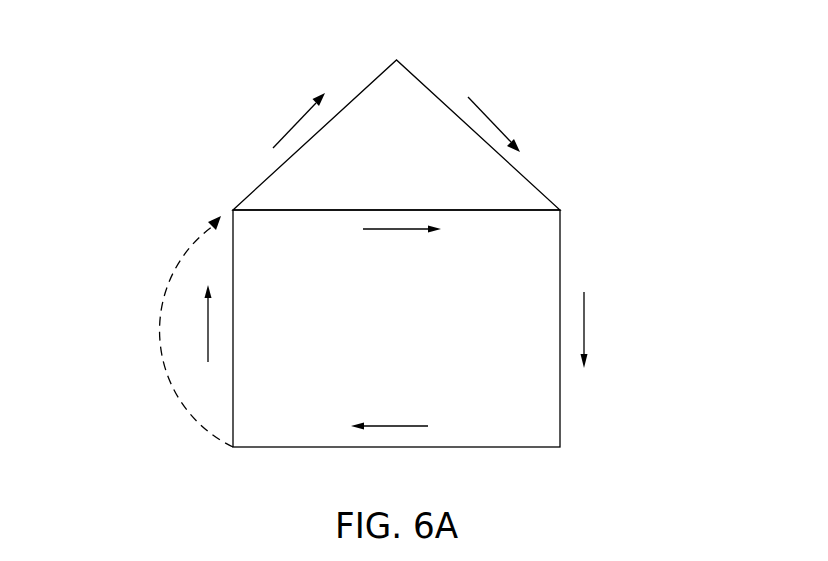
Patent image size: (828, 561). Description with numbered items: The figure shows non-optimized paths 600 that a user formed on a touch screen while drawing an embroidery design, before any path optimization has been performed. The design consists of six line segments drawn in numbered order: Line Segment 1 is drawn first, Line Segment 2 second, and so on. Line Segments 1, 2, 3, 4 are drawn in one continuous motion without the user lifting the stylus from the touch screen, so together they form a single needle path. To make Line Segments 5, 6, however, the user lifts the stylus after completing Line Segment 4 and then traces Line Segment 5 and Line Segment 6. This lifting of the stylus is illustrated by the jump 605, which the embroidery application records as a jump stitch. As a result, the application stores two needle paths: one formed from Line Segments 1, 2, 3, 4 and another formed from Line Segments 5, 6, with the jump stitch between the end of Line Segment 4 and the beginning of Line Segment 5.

The non-optimized paths 600 is at (603, 68).
The jump 605 is at (153, 326).
The Line Segment 1 is at (196, 323).
The Line Segment 2 is at (402, 247).
The Line Segment 3 is at (597, 330).
The Line Segment 4 is at (389, 409).
The Line Segment 5 is at (299, 120).
The Line Segment 6 is at (494, 121).